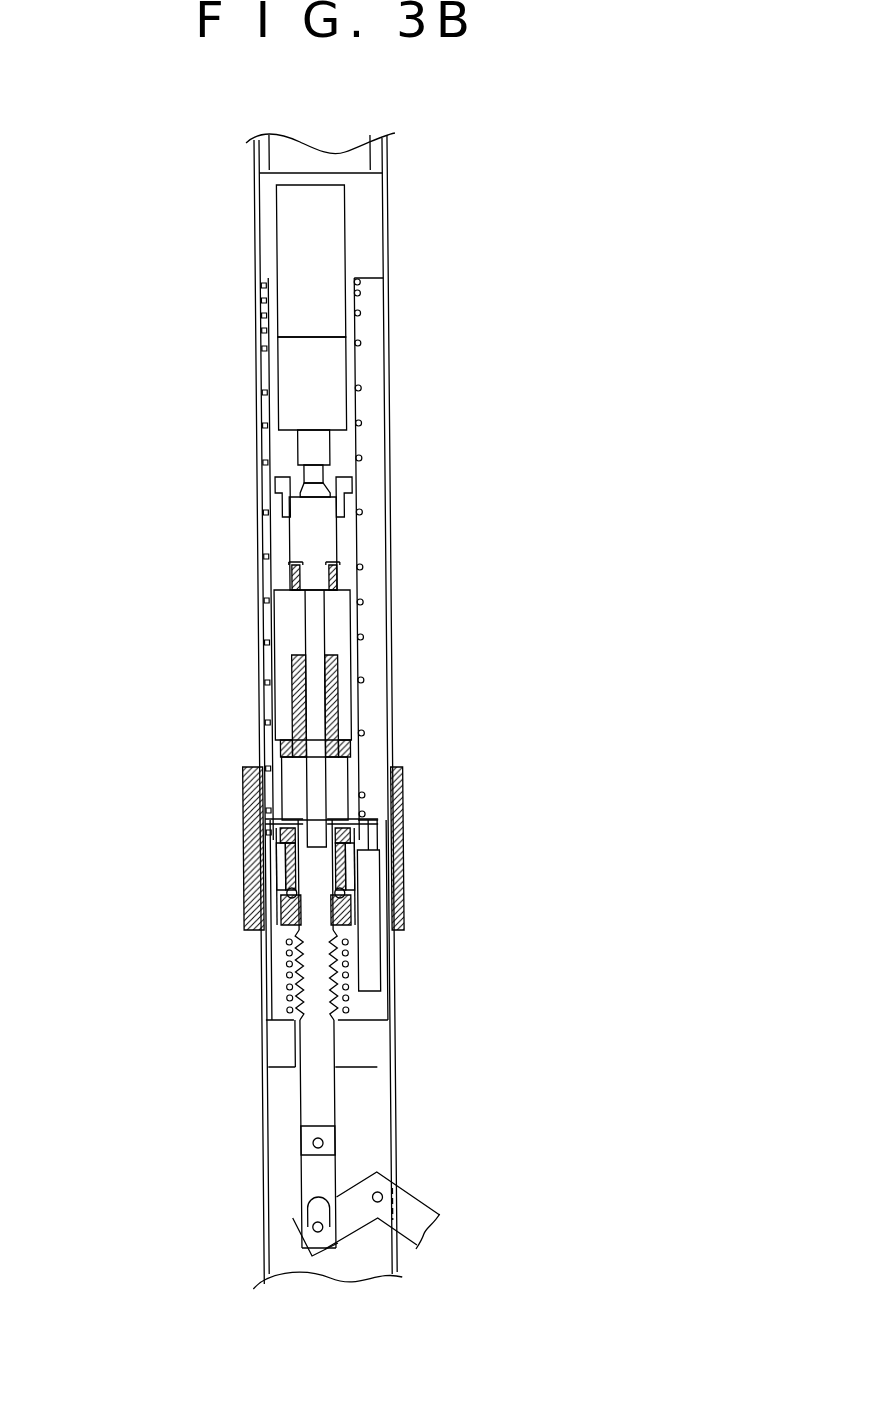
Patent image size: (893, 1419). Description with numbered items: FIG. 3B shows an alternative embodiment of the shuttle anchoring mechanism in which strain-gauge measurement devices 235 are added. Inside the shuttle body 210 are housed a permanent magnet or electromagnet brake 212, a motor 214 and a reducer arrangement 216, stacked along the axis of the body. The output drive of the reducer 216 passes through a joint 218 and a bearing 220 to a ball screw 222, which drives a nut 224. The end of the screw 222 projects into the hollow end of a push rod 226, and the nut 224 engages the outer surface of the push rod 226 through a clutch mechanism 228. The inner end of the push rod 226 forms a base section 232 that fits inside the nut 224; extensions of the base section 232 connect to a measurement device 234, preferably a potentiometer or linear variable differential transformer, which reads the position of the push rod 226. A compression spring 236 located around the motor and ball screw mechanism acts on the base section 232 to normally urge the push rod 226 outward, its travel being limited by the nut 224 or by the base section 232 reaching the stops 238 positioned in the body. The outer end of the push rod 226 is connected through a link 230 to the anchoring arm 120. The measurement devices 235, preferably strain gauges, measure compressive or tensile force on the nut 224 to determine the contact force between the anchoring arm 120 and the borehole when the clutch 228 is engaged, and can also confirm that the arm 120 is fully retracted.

The anchoring arm 120 is at (420, 1212).
The shuttle body 210 is at (385, 460).
The permanent magnet brake 212 is at (350, 237).
The motor 214 is at (357, 300).
The reducer arrangement 216 is at (350, 378).
The joint 218 is at (292, 443).
The bearing 220 is at (293, 538).
The ball screw 222 is at (305, 630).
The nut 224 is at (325, 680).
The push rod 226 is at (340, 1091).
The clutch mechanism 228 is at (365, 900).
The link 230 is at (315, 1187).
The base section 232 is at (363, 823).
The measurement device 234 is at (382, 979).
The measurement devices 235 is at (275, 487).
The compression spring 236 is at (372, 585).
The stops 238 is at (280, 842).